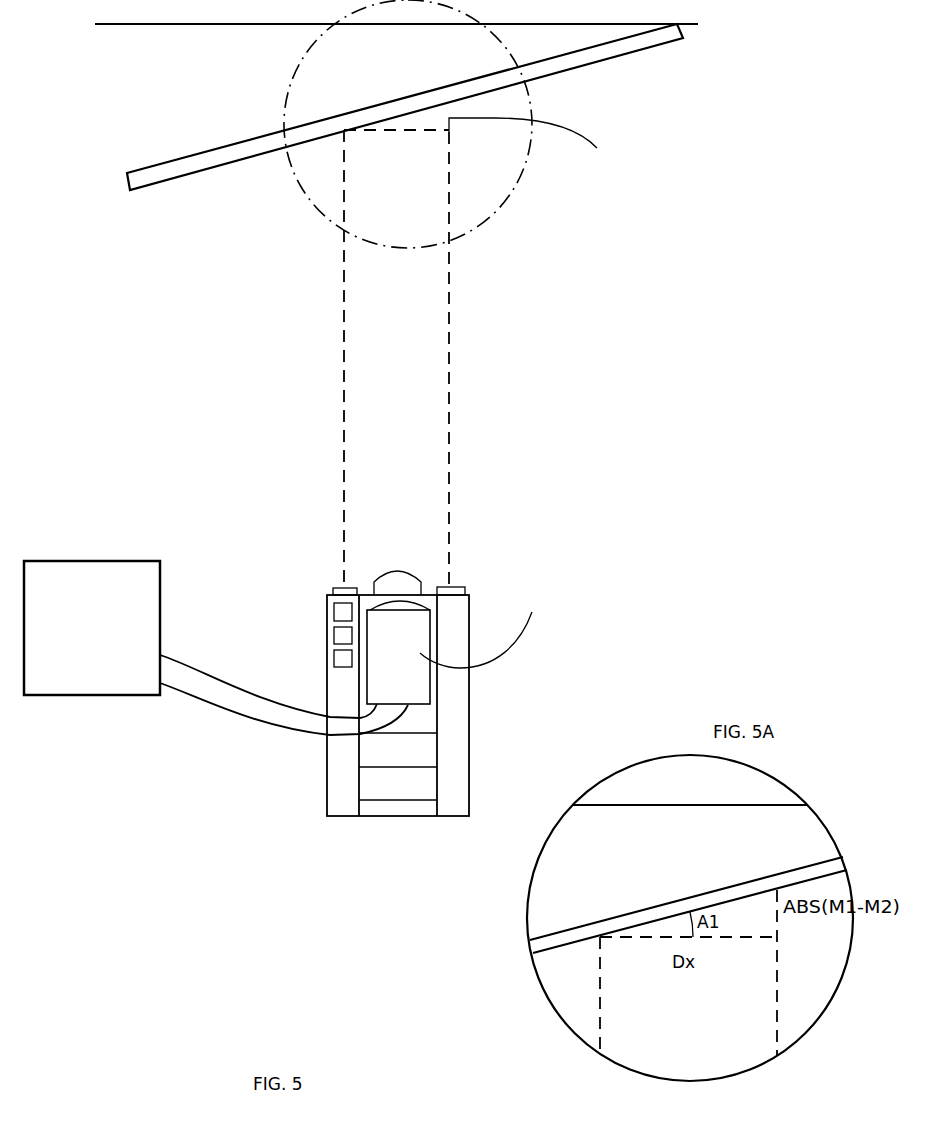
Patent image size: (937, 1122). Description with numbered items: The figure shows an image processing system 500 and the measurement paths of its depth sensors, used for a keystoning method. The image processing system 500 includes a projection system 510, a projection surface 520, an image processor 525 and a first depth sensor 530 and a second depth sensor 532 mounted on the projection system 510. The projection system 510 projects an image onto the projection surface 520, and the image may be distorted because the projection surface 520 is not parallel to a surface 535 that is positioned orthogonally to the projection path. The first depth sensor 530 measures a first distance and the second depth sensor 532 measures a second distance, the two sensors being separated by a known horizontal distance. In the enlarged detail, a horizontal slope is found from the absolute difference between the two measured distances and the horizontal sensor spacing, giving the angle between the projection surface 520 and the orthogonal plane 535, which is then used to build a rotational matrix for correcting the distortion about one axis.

In FIG. 5, the image processing system 500 is at (362, 294).
In FIG. 5, the projection system 510 is at (458, 763).
In FIG. 5, the projection surface 520 is at (195, 173).
In FIG. 5A, the projection surface 520 is at (683, 900).
In FIG. 5, the image processor 525 is at (216, 648).
In FIG. 5, the first depth sensor 530 is at (340, 586).
In FIG. 5, the second depth sensor 532 is at (460, 583).
In FIG. 5, the surface 535 is at (180, 26).
In FIG. 5A, the surface 535 is at (677, 812).